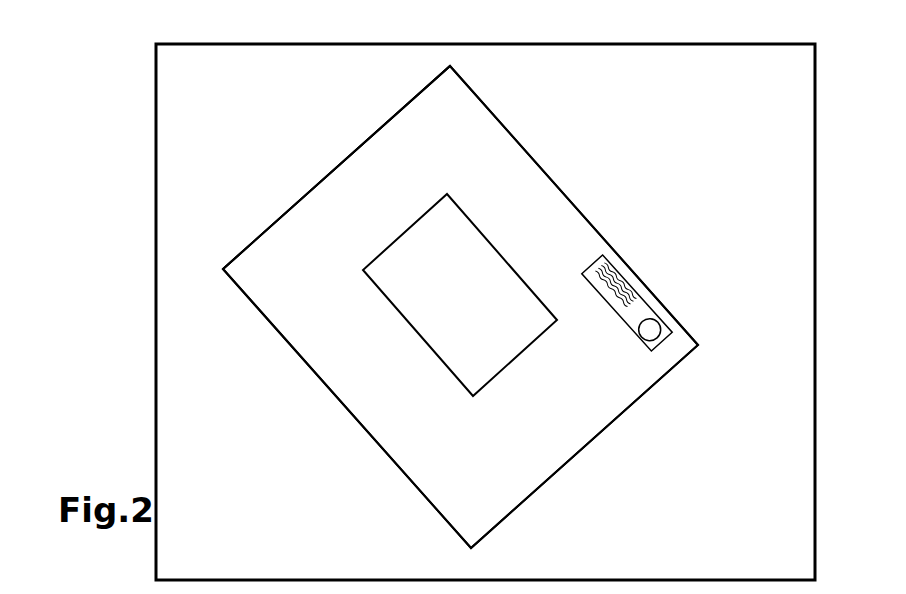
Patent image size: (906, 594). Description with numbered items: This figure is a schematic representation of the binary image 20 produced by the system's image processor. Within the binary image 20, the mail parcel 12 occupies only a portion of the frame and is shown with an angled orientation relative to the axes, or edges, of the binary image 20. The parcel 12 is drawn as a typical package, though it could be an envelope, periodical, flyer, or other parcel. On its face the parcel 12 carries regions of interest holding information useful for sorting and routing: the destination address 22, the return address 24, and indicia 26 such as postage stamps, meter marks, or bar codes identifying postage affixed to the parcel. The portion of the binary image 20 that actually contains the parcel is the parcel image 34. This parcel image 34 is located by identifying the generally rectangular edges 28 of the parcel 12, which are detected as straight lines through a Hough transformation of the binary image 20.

The binary image 20 is at (229, 40).
The mail parcel 12 is at (268, 159).
The parcel image 34 is at (357, 175).
The edges 28 is at (583, 213).
The indicia 26 is at (638, 289).
The destination address 22 is at (425, 329).
The return address 24 is at (437, 238).